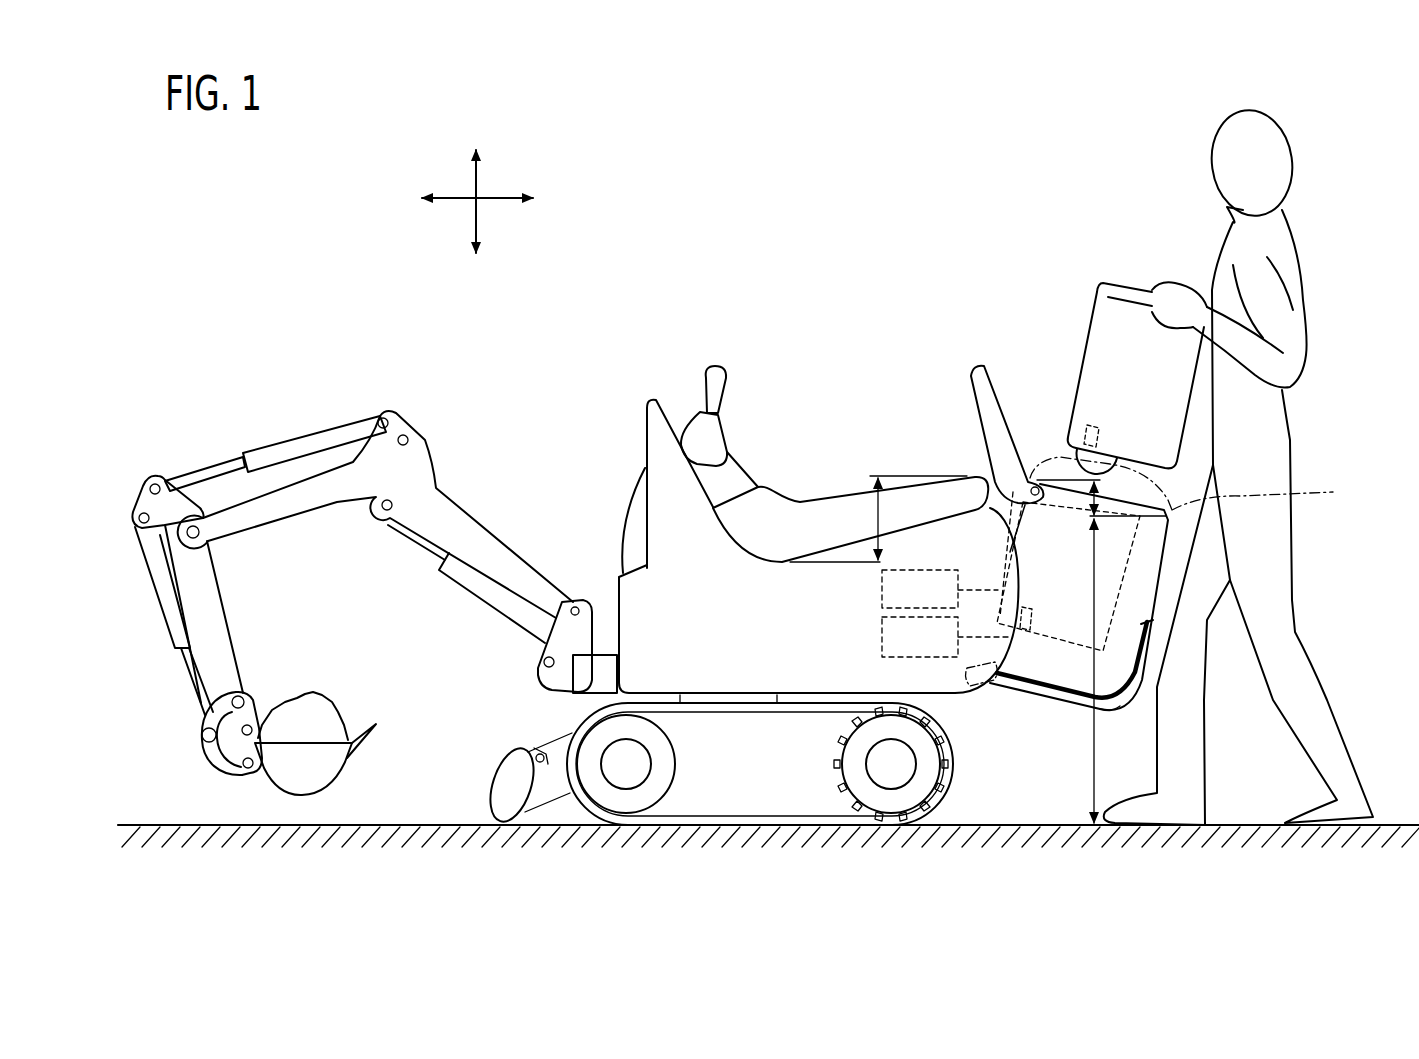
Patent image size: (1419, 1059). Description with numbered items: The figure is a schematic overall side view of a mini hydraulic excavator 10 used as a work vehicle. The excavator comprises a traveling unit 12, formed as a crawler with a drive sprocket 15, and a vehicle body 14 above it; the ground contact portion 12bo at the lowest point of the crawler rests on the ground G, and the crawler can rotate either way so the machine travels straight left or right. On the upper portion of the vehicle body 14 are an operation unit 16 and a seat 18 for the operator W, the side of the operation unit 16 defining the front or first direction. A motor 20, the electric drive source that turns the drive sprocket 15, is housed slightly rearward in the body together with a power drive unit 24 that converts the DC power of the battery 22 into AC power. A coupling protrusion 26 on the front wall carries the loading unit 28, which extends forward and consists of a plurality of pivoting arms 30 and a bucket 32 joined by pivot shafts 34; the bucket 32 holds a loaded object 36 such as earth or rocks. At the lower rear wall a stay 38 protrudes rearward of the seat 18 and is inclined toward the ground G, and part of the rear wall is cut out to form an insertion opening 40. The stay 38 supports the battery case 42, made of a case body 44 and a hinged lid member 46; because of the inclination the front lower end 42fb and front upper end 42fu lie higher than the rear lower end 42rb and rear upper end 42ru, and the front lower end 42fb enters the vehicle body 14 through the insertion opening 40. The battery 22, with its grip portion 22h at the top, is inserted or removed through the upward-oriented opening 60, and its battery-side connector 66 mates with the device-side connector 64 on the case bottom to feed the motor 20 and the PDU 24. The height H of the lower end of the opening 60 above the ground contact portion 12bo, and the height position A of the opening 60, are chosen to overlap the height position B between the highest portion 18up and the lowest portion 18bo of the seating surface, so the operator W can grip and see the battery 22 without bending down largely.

The hydraulic excavator 10 is at (825, 119).
The traveling unit 12 is at (743, 761).
The ground contact portion 12bo is at (743, 822).
The vehicle body 14 is at (756, 574).
The drive sprocket 15 is at (852, 770).
The operation unit 16 is at (731, 352).
The seat 18 is at (834, 505).
The highest portion of the upper surface of the seating surface of the seat 18up is at (983, 477).
The lowest portion of the upper surface of the seating surface of the seat 18bo is at (766, 564).
The motor 20 is at (880, 587).
The battery 22 is at (1116, 367).
The grip portion 22h is at (1130, 282).
The power drive unit 24 is at (880, 635).
The coupling protrusion 26 is at (578, 678).
The loading unit 28 is at (368, 613).
The pivoting arm 30 is at (490, 532).
The bucket 32 is at (328, 772).
The pivot shaft 34 is at (206, 527).
The loaded object 36 is at (318, 705).
The stay 38 is at (1075, 694).
The insertion opening 40 is at (1014, 561).
The battery case 42 is at (1136, 574).
The front upper end 42fu is at (1047, 455).
The rear upper end 42ru is at (1278, 497).
The front lower end 42fb is at (985, 654).
The rear lower end 42rb is at (1120, 706).
The case body 44 is at (1138, 594).
The lid member 46 is at (972, 388).
The opening 60 is at (1146, 514).
The device-side connector 64 is at (1033, 609).
The battery-side connector 66 is at (1092, 424).
The operator W is at (1272, 422).
The ground G is at (441, 823).
The height position of the opening A is at (1088, 503).
The height position of the seating surface B is at (870, 519).
The height of the opening lower end H is at (1095, 671).